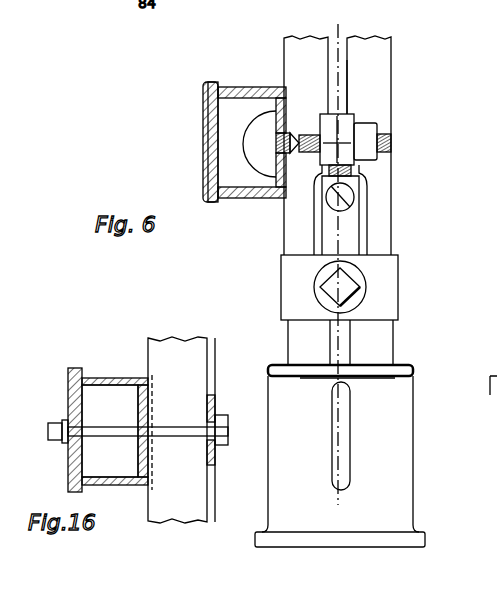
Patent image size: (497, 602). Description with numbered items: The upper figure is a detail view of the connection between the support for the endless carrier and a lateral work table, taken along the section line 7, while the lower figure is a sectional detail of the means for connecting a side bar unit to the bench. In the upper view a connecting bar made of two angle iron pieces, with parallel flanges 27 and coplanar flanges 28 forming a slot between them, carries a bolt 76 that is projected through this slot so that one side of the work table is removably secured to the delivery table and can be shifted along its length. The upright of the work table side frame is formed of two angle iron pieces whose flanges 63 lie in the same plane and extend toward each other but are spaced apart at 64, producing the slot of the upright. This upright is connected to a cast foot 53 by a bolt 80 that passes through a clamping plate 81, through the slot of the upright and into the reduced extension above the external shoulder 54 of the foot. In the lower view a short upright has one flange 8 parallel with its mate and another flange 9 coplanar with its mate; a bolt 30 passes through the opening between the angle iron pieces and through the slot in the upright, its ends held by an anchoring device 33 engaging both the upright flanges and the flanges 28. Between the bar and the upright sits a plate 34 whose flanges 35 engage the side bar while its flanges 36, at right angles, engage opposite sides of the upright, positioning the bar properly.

In FIG. 6, the section line 7- 7 is at (340, 268).
In FIG. 6, the flange 28 is at (287, 182).
In FIG. 16, the flange 28 is at (213, 368).
In FIG. 6, the flange 63 is at (360, 44).
In FIG. 6, the space 64 is at (345, 68).
In FIG. 6, the flange 35 is at (205, 164).
In FIG. 16, the flange 35 is at (143, 488).
In FIG. 6, the plate 34 is at (205, 122).
In FIG. 16, the plate 34 is at (148, 398).
In FIG. 6, the flange 36 is at (222, 84).
In FIG. 16, the flange 36 is at (158, 462).
In FIG. 6, the flange 27 is at (245, 200).
In FIG. 6, the bolt 76 is at (298, 140).
In FIG. 6, the clamping plate 81 is at (390, 300).
In FIG. 6, the bolt 80 is at (320, 288).
In FIG. 6, the external shoulder 54 is at (405, 366).
In FIG. 6, the foot 53 is at (413, 440).
In FIG. 16, the flange 8 is at (150, 378).
In FIG. 16, the anchoring device 33 is at (68, 396).
In FIG. 16, the flange 9 is at (68, 463).
In FIG. 16, the bolt 30 is at (195, 437).